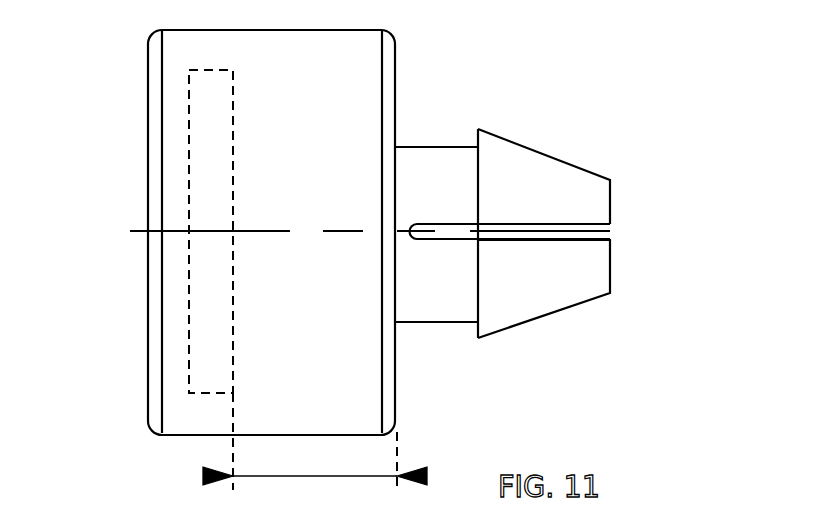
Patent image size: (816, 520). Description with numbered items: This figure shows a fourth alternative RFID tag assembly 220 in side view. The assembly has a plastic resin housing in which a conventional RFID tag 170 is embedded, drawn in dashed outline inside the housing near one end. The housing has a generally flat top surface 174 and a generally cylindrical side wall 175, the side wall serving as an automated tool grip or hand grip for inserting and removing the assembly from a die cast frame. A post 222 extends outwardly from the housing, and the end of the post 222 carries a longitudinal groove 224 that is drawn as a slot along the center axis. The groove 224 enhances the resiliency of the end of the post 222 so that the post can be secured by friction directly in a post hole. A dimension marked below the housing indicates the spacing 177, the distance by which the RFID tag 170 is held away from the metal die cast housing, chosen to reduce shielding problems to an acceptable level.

The RFID tag 170 is at (189, 100).
The flat top surface 174 is at (148, 172).
The cylindrical side wall 175 is at (262, 30).
The spacing 177 is at (203, 476).
The fourth alternative RFID tag assembly 220 is at (622, 58).
The post 222 is at (428, 147).
The longitudinal groove 224 is at (603, 234).